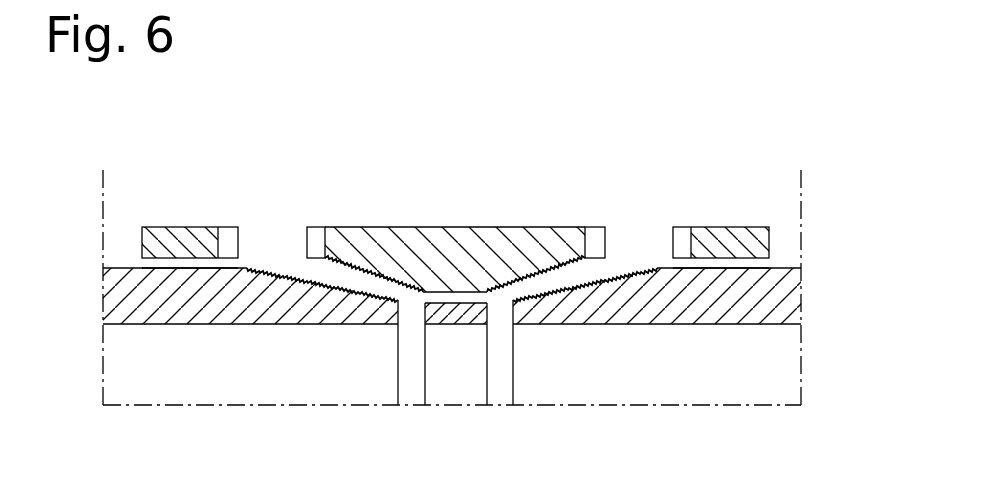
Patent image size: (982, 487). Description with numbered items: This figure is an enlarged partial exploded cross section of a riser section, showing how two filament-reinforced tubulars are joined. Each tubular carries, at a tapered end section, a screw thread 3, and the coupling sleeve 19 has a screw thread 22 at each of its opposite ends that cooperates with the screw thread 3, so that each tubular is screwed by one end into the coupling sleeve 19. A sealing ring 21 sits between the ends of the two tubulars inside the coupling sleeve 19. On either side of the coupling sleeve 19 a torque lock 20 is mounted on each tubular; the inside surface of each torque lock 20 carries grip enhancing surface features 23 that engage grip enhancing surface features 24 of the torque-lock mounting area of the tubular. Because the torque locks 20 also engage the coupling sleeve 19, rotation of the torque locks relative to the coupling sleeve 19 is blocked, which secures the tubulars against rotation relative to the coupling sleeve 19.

The screw thread 3 is at (285, 267).
The coupling sleeve 19 is at (452, 222).
The torque lock 20 is at (182, 214).
The sealing ring 21 is at (461, 362).
The screw thread 22 is at (365, 265).
The grip enhancing surface features 23 is at (166, 264).
The grip enhancing surface features 24 is at (204, 263).